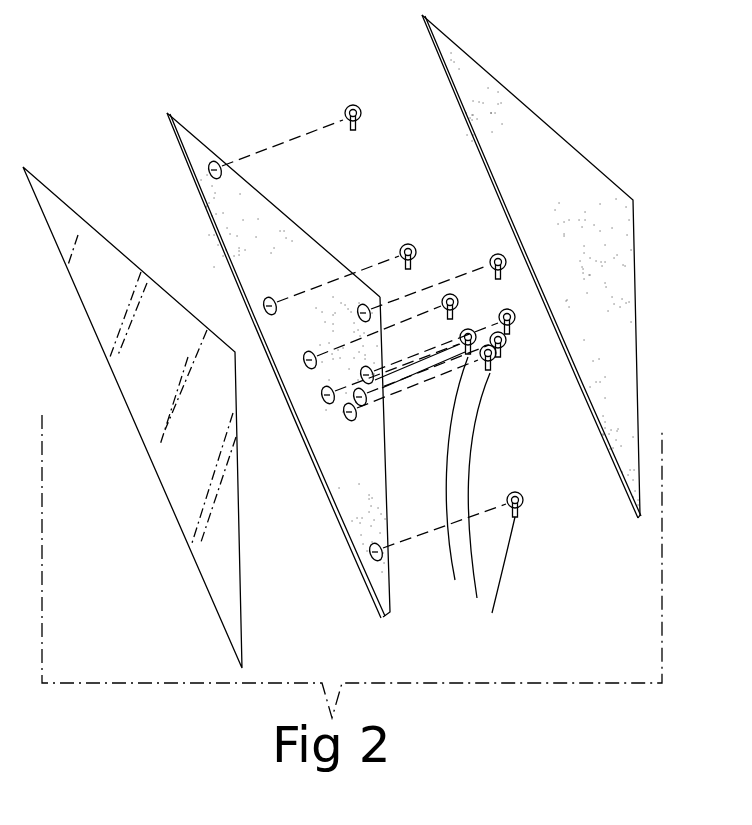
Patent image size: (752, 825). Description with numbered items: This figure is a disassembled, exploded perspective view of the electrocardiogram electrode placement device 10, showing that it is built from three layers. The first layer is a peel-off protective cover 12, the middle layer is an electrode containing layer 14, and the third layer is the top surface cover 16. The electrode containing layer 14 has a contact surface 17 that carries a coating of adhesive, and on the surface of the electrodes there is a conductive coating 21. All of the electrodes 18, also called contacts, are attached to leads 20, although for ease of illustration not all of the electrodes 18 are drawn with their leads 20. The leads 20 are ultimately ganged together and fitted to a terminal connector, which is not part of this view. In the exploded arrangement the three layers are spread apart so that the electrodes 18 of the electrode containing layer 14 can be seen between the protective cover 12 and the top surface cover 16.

The electrocardiogram electrode placement device 10 is at (140, 611).
The peel-off protective cover 12 is at (50, 198).
The electrode containing layer 14 is at (185, 138).
The top surface cover 16 is at (555, 152).
The contact surface 17 is at (205, 205).
The electrodes 18 is at (352, 104).
The leads 20 is at (503, 560).
The conductive coating 21 is at (403, 244).